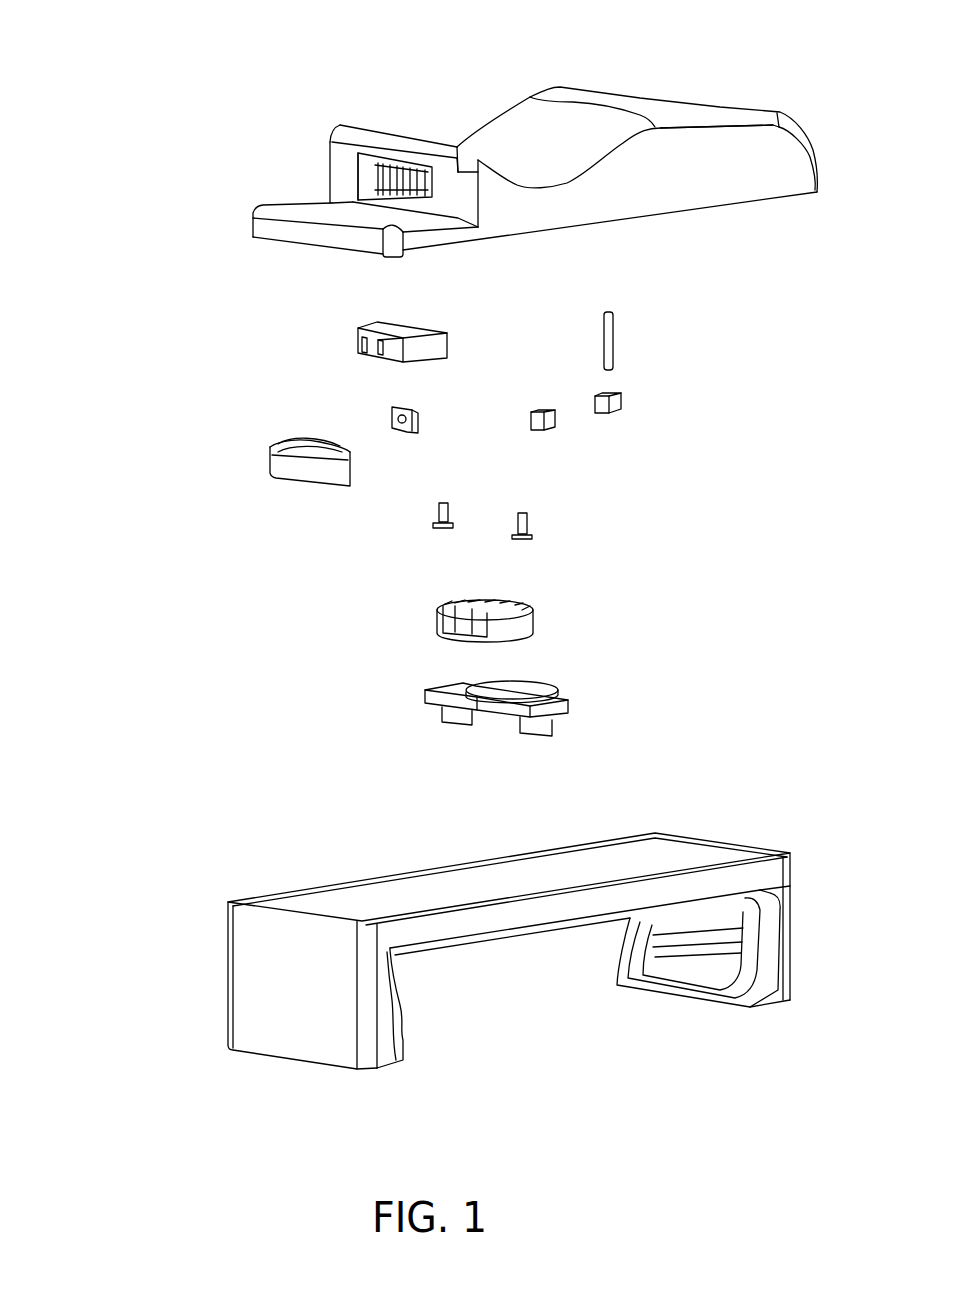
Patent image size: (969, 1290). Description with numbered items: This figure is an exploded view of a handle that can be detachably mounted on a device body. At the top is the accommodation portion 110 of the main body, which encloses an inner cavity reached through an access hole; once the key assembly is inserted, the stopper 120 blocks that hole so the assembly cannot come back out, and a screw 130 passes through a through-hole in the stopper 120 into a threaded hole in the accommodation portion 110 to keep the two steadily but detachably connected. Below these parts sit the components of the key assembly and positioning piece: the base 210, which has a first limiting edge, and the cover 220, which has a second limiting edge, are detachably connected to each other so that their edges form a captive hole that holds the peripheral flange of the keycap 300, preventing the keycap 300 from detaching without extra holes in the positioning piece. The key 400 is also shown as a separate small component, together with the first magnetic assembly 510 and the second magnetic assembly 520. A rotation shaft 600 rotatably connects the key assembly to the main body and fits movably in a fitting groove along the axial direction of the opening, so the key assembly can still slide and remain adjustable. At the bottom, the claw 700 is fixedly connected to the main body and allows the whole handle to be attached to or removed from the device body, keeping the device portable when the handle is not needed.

The accommodation portion 110 is at (340, 128).
The stopper 120 is at (442, 731).
The screw 130 is at (513, 538).
The base 210 is at (432, 636).
The cover 220 is at (352, 343).
The keycap 300 is at (270, 465).
The key 400 is at (415, 410).
The first magnetic assembly 510 is at (552, 432).
The second magnetic assembly 520 is at (621, 414).
The rotation shaft 600 is at (625, 335).
The claw 700 is at (312, 1025).